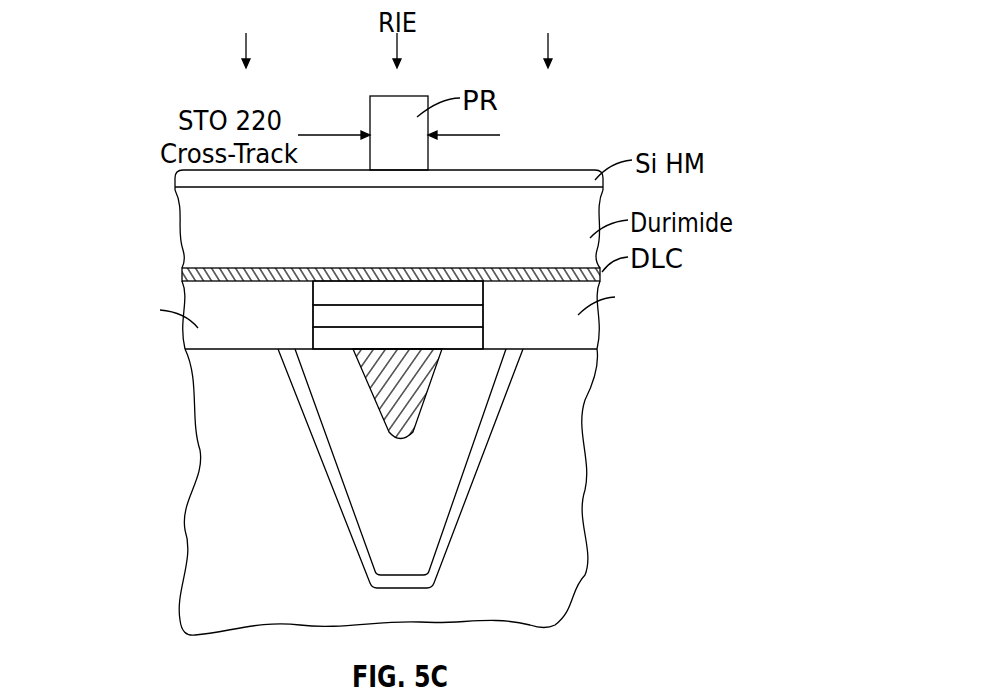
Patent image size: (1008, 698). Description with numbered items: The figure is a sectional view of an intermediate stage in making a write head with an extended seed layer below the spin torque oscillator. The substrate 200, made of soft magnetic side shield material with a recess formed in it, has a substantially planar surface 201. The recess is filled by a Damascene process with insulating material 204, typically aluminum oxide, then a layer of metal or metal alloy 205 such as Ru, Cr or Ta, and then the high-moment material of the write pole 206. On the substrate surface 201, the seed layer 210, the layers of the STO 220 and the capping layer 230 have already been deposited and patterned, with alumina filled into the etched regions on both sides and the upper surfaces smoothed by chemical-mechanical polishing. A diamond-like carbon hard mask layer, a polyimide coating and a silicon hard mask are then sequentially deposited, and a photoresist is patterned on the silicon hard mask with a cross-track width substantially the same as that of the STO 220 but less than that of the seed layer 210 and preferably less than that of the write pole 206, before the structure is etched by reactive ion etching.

The substrate 200 is at (563, 590).
The substantially planar surface 201 is at (582, 345).
The insulating material 204 is at (477, 453).
The metal or metal alloy 205 is at (363, 512).
The write pole 206 is at (382, 382).
The extended seed layer 210 is at (470, 337).
The spin torque oscillator 220 is at (327, 312).
The capping layer 230 is at (327, 285).